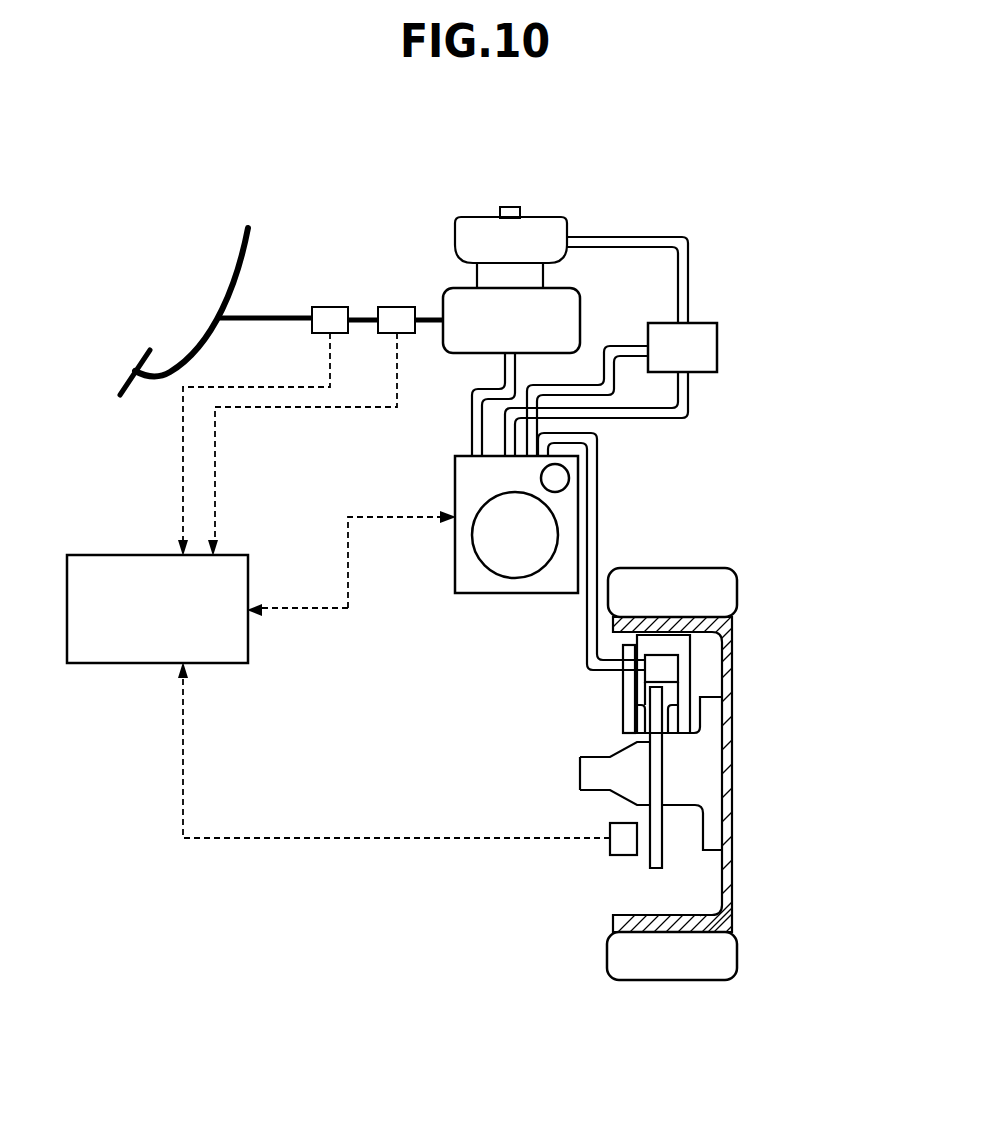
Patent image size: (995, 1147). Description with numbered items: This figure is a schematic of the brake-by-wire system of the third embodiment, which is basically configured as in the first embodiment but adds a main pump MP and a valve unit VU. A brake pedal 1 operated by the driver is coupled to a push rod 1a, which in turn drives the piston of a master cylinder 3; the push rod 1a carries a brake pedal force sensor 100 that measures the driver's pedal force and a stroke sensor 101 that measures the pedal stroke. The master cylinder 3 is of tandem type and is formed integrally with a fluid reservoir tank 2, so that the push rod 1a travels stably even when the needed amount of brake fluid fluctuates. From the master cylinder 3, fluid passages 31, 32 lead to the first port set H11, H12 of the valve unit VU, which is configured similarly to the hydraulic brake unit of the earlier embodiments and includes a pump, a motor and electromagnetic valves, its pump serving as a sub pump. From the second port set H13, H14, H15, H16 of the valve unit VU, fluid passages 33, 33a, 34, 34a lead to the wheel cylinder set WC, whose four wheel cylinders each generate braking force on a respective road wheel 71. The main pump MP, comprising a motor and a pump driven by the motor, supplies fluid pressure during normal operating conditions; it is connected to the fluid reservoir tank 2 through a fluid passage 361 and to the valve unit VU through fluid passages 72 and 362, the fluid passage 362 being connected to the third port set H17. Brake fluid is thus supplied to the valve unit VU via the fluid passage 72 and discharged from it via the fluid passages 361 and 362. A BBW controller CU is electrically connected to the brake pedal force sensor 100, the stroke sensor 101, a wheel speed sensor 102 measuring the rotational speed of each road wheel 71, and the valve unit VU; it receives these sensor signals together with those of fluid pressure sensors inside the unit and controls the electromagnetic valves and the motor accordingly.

The brake pedal 1 is at (140, 360).
The push rod 1a is at (262, 321).
The fluid reservoir tank 2 is at (455, 231).
The master cylinder 3 is at (580, 321).
The fluid passage 31 is at (397, 404).
The fluid passage 32 is at (397, 404).
The fluid passage 33 is at (608, 551).
The fluid passage 33a is at (608, 551).
The fluid passage 34 is at (608, 551).
The fluid passage 34a is at (535, 648).
The fluid passage 72 is at (633, 345).
The fluid passage 361 is at (688, 300).
The fluid passage 362 is at (688, 392).
The brake pedal force sensor 100 is at (325, 307).
The stroke sensor 101 is at (395, 307).
The wheel speed sensor 102 is at (610, 848).
The road wheel 71 is at (735, 548).
The first port set port H11 is at (397, 404).
The first port set port H12 is at (475, 455).
The second port set port H13 is at (608, 551).
The second port set port H14 is at (608, 551).
The second port set port H15 is at (608, 551).
The second port set port H16 is at (608, 551).
The third port set H17 is at (562, 376).
The BBW controller CU is at (110, 555).
The main pump MP is at (717, 348).
The valve unit VU is at (455, 553).
The wheel cylinder set WC is at (663, 665).